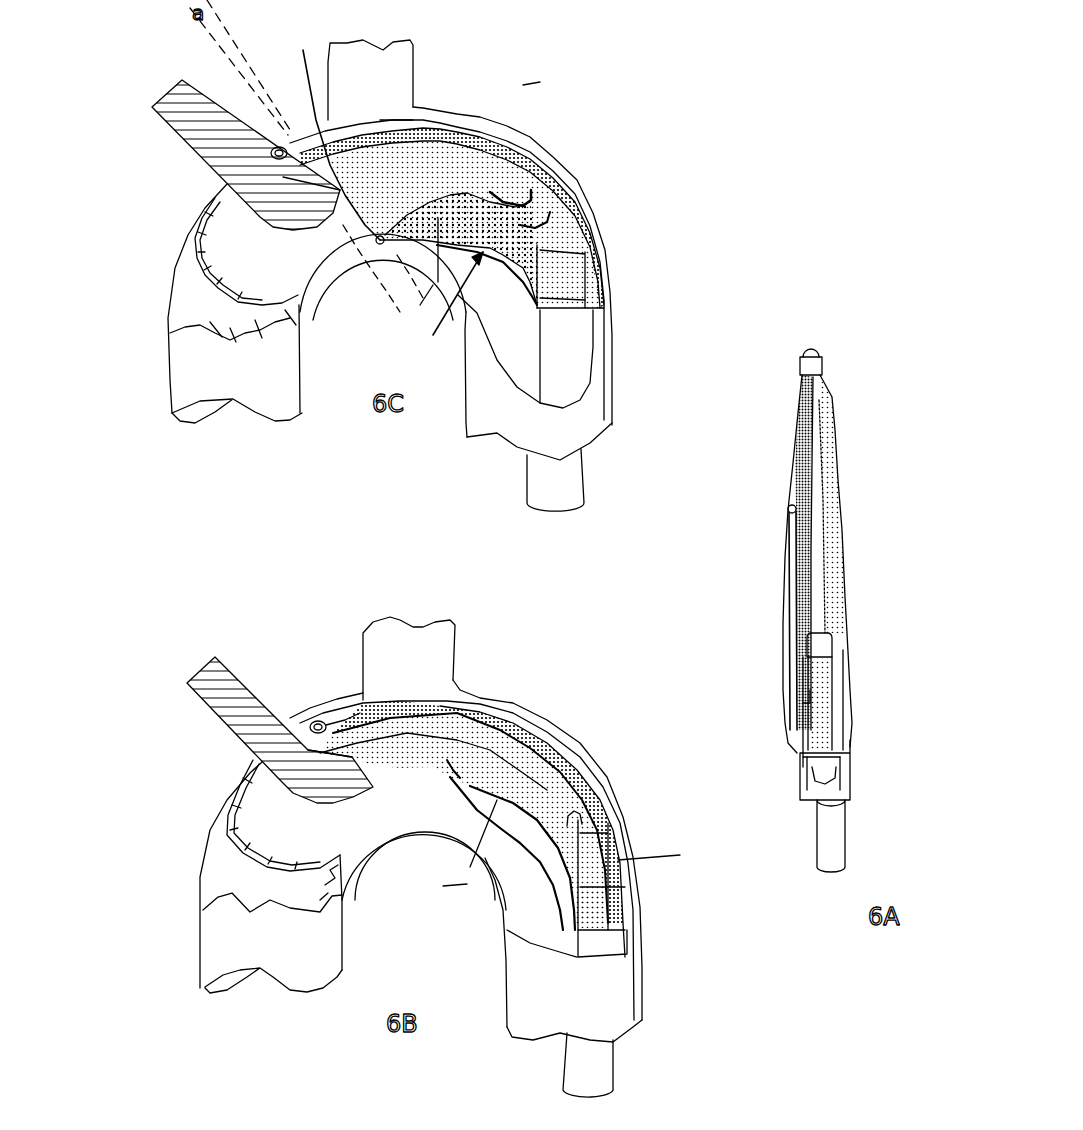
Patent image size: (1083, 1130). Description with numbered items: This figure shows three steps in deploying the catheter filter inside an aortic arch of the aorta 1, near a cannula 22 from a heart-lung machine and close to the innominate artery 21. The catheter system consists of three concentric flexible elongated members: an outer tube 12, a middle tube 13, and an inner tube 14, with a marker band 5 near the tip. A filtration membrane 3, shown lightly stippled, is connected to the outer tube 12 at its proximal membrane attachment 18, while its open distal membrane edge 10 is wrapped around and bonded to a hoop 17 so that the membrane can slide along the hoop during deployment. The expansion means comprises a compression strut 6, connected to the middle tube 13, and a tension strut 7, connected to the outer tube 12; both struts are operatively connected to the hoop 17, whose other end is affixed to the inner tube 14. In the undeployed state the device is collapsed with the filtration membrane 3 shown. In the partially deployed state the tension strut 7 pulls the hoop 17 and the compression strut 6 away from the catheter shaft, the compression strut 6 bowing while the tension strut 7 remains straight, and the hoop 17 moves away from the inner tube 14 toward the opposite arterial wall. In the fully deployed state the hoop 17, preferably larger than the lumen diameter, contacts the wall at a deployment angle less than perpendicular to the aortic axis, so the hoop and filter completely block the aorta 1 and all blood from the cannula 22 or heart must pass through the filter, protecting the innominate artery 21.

In FIG. 6C, the aorta 1 is at (160, 297).
In FIG. 6B, the aorta 1 is at (195, 870).
In FIG. 6C, the filtration membrane 3 is at (415, 178).
In FIG. 6B, the filtration membrane 3 is at (512, 710).
In FIG. 6A, the filtration membrane 3 is at (836, 500).
In FIG. 6C, the marker band 5 is at (533, 95).
In FIG. 6A, the marker band 5 is at (826, 366).
In FIG. 6C, the compression strut 6 is at (416, 307).
In FIG. 6B, the compression strut 6 is at (470, 843).
In FIG. 6A, the compression strut 6 is at (790, 577).
In FIG. 6C, the tension strut 7 is at (448, 311).
In FIG. 6B, the tension strut 7 is at (527, 847).
In FIG. 6A, the tension strut 7 is at (784, 552).
In FIG. 6B, the distal membrane edge 10 is at (450, 772).
In FIG. 6B, the outer tube 12 is at (623, 903).
In FIG. 6A, the outer tube 12 is at (800, 780).
In FIG. 6B, the middle tube 13 is at (598, 828).
In FIG. 6A, the middle tube 13 is at (787, 680).
In FIG. 6C, the inner tube 14 is at (477, 133).
In FIG. 6B, the inner tube 14 is at (522, 743).
In FIG. 6A, the inner tube 14 is at (818, 585).
In FIG. 6C, the hoop 17 is at (327, 135).
In FIG. 6B, the hoop 17 is at (425, 760).
In FIG. 6A, the hoop 17 is at (795, 470).
In FIG. 6C, the proximal membrane attachment 18 is at (580, 248).
In FIG. 6B, the proximal membrane attachment 18 is at (607, 941).
In FIG. 6A, the proximal membrane attachment 18 is at (833, 761).
In FIG. 6C, the innominate artery 21 is at (427, 72).
In FIG. 6B, the innominate artery 21 is at (457, 653).
In FIG. 6C, the cannula 22 is at (152, 129).
In FIG. 6B, the cannula 22 is at (190, 710).